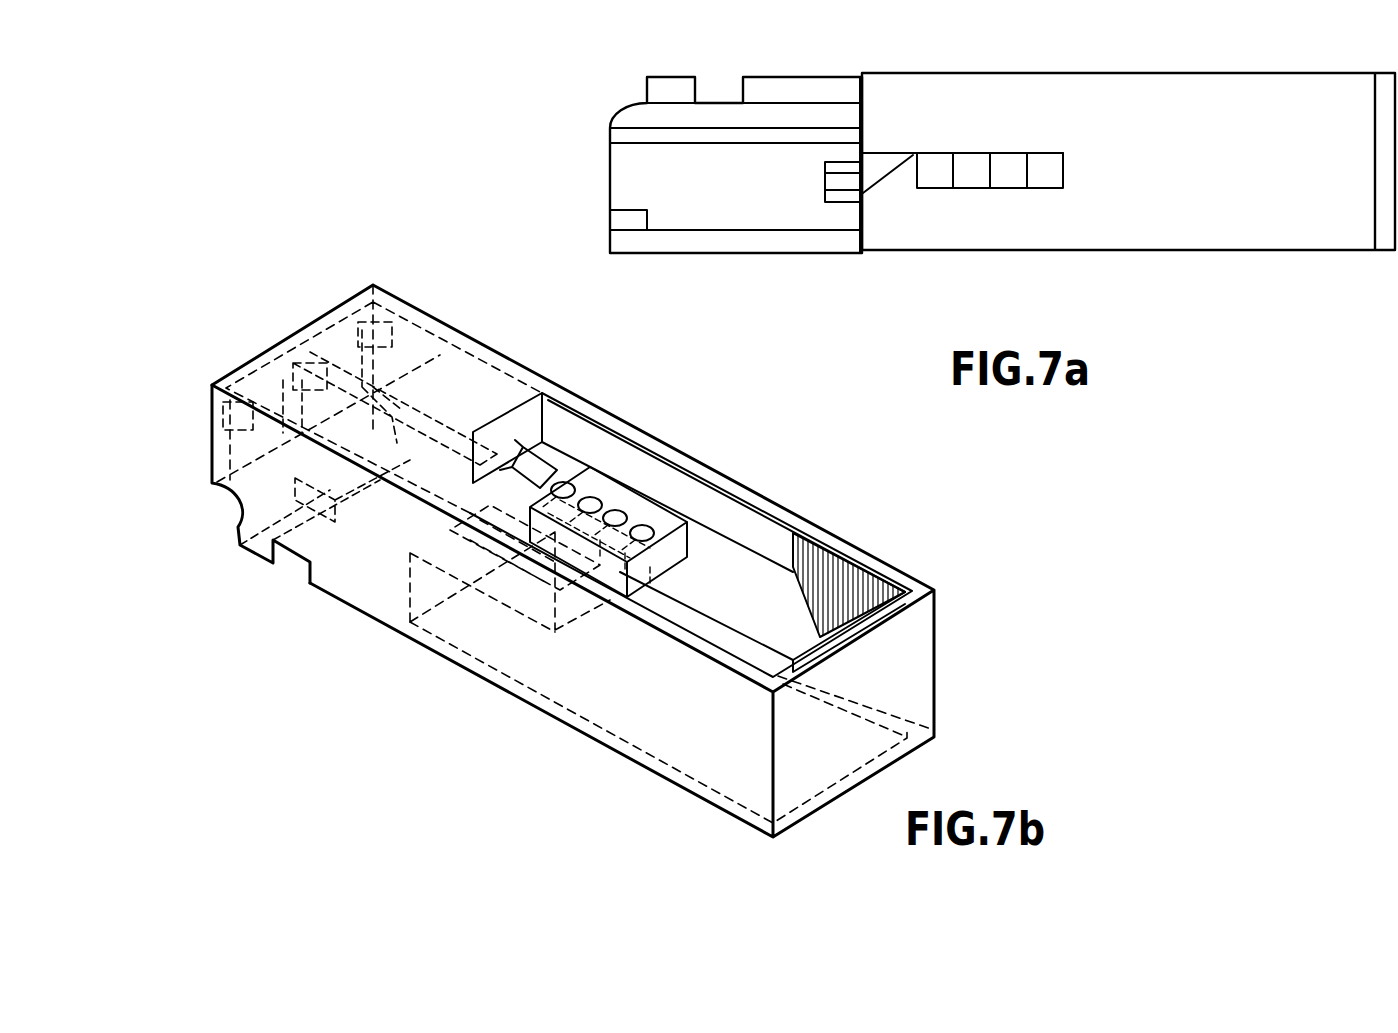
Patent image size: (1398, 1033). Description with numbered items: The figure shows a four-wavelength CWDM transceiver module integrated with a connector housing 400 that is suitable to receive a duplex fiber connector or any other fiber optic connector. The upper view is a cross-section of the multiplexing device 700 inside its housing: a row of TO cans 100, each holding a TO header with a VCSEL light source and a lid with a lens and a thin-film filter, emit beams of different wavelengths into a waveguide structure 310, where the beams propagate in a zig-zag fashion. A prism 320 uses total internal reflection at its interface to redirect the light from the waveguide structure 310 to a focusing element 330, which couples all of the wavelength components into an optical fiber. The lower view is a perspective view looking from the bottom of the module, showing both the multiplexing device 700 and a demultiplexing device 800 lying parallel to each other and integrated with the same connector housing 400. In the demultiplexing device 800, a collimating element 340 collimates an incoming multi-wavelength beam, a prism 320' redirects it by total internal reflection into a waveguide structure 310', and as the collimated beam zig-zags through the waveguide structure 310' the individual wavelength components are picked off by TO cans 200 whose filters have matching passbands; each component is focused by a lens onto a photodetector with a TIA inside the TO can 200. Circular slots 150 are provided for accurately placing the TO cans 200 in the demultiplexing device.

In FIG. 7a, the TO can 100 is at (948, 195).
In FIG. 7b, the slot 150 is at (604, 490).
In FIG. 7b, the TO can 200 is at (642, 520).
In FIG. 7a, the waveguide structure 310 is at (1128, 125).
In FIG. 7b, the waveguide structure 310' is at (619, 561).
In FIG. 7a, the prism 320 is at (888, 243).
In FIG. 7b, the prism 320' is at (605, 427).
In FIG. 7a, the focusing element 330 is at (853, 199).
In FIG. 7b, the collimating element 340 is at (463, 423).
In FIG. 7a, the connector housing 400 is at (645, 168).
In FIG. 7b, the connector housing 400 is at (337, 468).
In FIG. 7a, the multiplexing device 700 is at (1063, 62).
In FIG. 7b, the multiplexing device 700 is at (509, 607).
In FIG. 7b, the demultiplexing device 800 is at (848, 544).